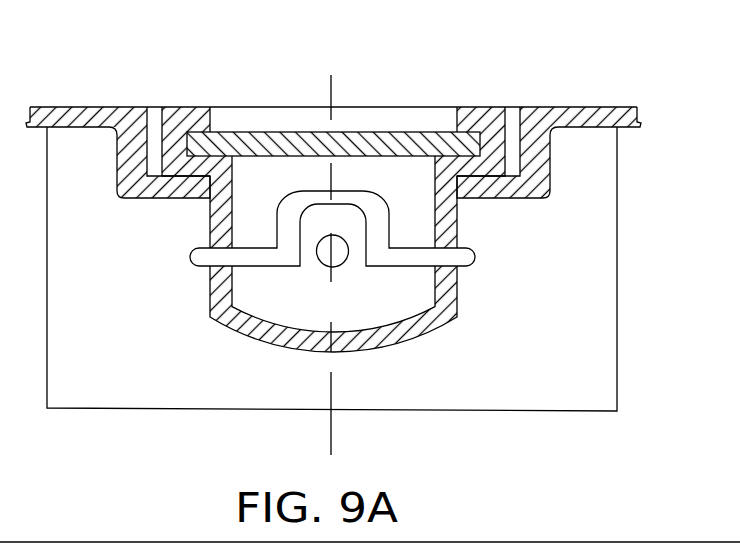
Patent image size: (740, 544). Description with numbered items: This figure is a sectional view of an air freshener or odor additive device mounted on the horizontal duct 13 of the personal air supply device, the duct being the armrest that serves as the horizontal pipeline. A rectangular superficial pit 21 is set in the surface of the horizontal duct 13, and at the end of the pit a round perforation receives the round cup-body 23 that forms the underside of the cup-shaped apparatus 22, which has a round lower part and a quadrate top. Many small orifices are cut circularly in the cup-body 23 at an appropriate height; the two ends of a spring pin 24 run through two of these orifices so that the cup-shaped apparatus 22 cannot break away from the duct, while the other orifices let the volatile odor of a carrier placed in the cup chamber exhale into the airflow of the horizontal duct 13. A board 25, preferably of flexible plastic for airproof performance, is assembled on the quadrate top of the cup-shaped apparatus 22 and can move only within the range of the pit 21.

The horizontal duct 13 is at (595, 107).
The rectangular superficial pit 21 is at (118, 111).
The cup-shaped apparatus 22 is at (480, 115).
The round cup-body 23 is at (225, 295).
The spring pin 24 is at (453, 257).
The board 25 is at (237, 142).